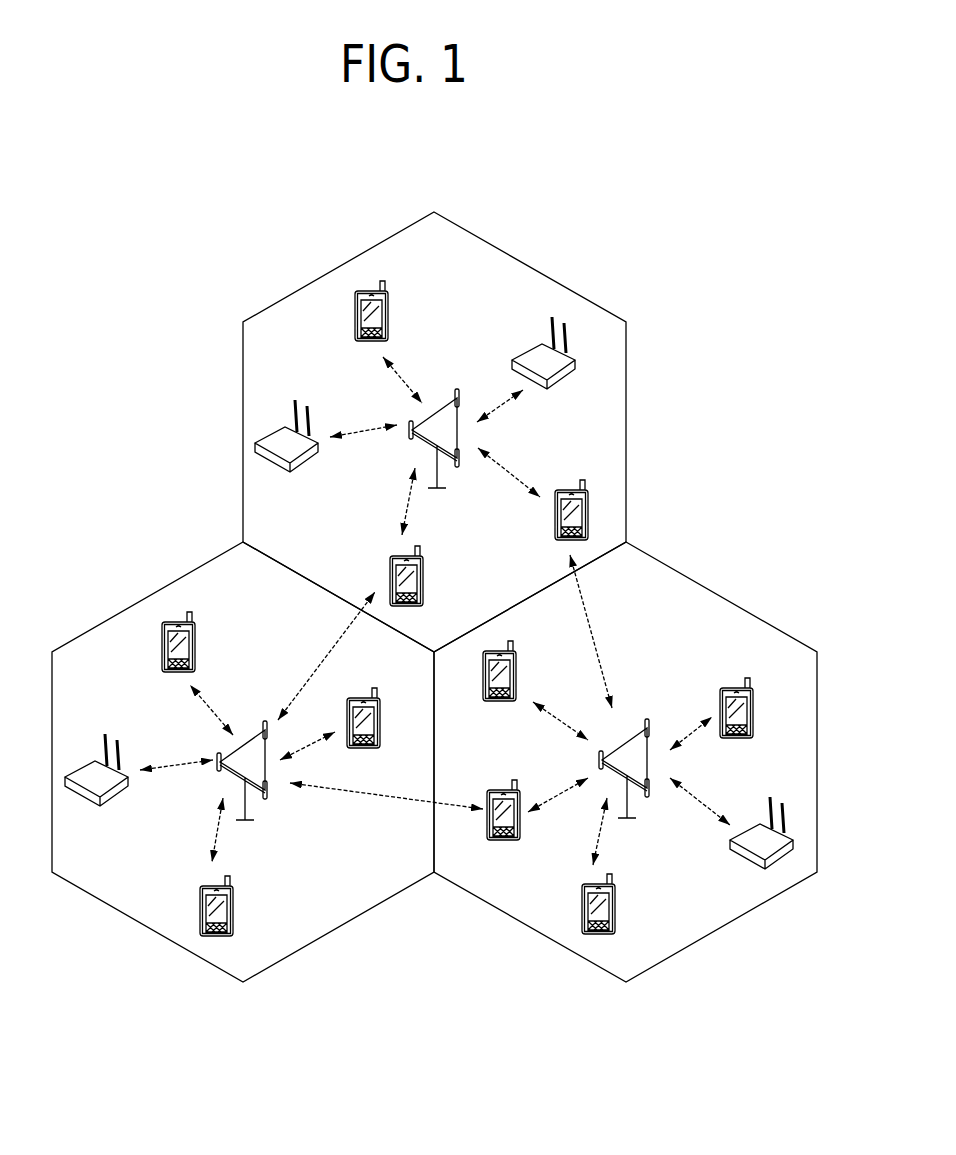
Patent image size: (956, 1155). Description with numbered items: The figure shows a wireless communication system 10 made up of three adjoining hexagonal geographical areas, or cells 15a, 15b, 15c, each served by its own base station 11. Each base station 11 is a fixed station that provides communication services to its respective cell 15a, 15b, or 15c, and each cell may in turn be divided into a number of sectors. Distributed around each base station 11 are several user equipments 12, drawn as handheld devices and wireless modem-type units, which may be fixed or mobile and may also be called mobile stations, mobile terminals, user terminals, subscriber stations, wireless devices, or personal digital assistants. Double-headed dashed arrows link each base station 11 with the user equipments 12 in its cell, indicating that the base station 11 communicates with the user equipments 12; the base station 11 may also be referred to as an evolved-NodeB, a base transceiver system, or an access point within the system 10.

The wireless communication system 10 is at (704, 327).
The base station 11 is at (447, 405).
The user equipment 12 is at (388, 312).
The cell 15a is at (627, 418).
The cell 15b is at (745, 610).
The cell 15c is at (122, 610).